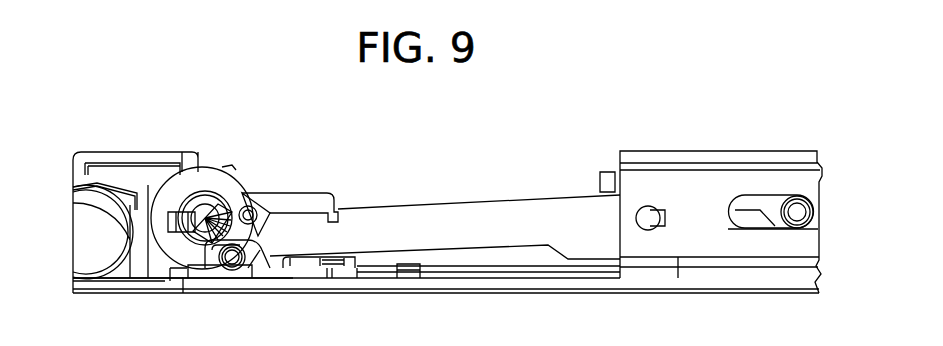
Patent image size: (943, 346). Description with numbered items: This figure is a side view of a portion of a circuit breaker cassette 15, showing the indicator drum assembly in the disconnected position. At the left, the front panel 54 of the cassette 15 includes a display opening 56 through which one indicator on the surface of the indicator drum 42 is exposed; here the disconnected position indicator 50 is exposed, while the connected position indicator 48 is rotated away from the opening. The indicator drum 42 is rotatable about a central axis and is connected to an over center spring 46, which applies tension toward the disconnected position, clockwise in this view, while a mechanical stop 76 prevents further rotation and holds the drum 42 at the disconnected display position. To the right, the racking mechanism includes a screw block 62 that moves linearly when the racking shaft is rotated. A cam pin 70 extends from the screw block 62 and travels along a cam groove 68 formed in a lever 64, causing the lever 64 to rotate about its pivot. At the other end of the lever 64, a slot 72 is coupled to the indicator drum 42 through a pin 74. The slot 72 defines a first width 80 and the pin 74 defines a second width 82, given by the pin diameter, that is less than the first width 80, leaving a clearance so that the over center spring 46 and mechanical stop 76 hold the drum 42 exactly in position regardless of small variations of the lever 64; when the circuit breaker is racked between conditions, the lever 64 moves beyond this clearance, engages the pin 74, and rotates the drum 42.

The cassette 15 is at (487, 119).
The indicator drum 42 is at (213, 172).
The over center spring 46 is at (196, 191).
The connected position indicator 48 is at (231, 168).
The disconnected position indicator 50 is at (150, 258).
The front panel 54 is at (80, 155).
The display opening 56 is at (132, 262).
The screw block 62 is at (697, 180).
The lever 64 is at (443, 206).
The cam groove 68 is at (770, 226).
The cam pin 70 is at (791, 204).
The slot 72 is at (264, 262).
The pin 74 is at (236, 262).
The mechanical stop 76 is at (261, 191).
The first width 80 is at (254, 240).
The second width 82 is at (217, 262).